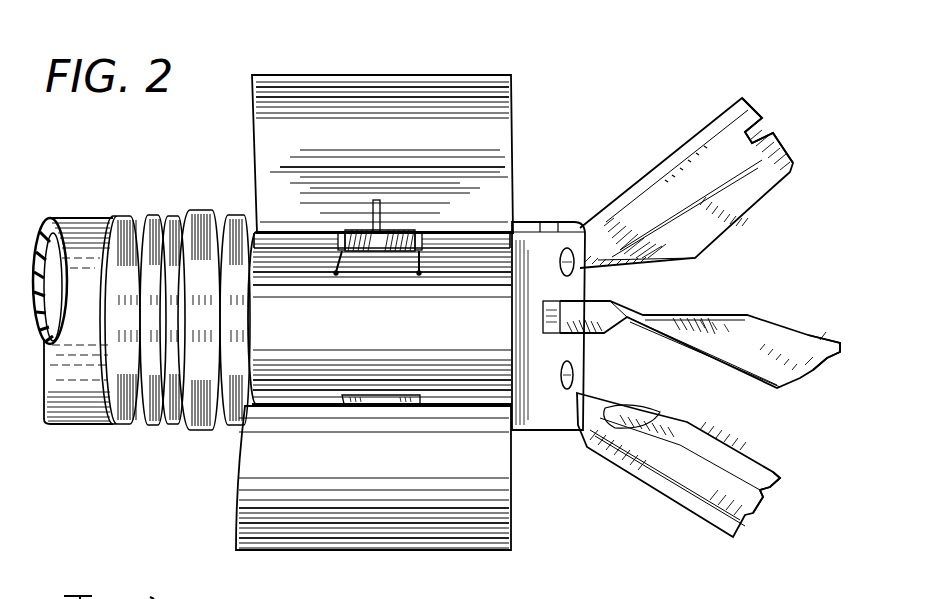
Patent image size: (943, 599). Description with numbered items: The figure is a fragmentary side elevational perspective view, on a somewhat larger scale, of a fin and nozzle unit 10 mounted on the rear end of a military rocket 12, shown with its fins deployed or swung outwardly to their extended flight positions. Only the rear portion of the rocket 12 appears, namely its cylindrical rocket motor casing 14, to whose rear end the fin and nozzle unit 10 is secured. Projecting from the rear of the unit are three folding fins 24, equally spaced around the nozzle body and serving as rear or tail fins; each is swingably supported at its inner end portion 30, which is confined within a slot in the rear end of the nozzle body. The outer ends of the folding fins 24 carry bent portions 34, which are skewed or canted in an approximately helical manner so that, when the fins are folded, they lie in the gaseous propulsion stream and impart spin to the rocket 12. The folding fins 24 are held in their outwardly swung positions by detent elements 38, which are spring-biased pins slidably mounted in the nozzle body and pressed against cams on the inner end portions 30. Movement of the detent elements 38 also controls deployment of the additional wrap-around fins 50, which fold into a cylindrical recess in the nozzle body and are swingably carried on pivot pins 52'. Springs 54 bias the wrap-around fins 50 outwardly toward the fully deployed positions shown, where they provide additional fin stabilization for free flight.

The fin and nozzle unit 10 is at (753, 76).
The military rocket 12 is at (88, 151).
The rocket motor casing 14 is at (86, 215).
The folding fins 24 is at (667, 160).
The inner end portions 30 is at (575, 305).
The bent portions 34 is at (768, 150).
The detent elements 38 is at (560, 333).
The wrap-around fins 50 is at (270, 135).
The pivot pins 52' is at (382, 222).
The springs 54 is at (405, 234).